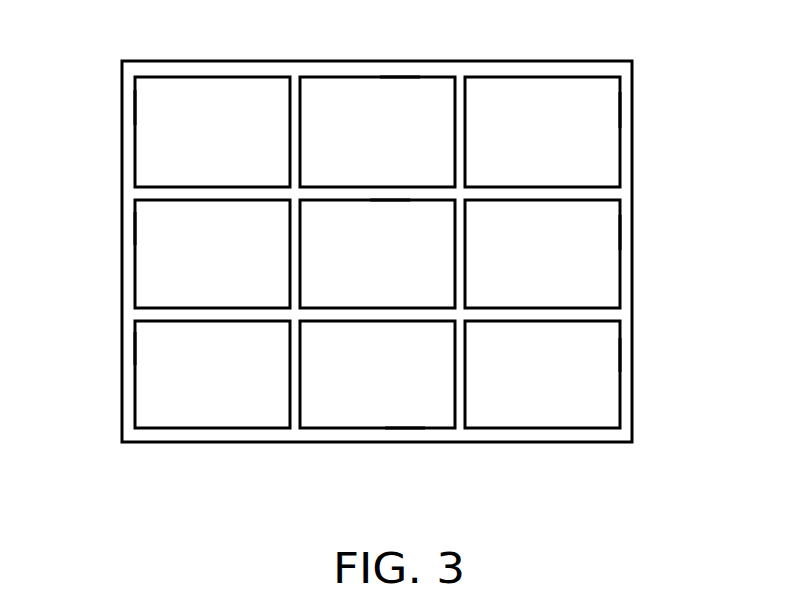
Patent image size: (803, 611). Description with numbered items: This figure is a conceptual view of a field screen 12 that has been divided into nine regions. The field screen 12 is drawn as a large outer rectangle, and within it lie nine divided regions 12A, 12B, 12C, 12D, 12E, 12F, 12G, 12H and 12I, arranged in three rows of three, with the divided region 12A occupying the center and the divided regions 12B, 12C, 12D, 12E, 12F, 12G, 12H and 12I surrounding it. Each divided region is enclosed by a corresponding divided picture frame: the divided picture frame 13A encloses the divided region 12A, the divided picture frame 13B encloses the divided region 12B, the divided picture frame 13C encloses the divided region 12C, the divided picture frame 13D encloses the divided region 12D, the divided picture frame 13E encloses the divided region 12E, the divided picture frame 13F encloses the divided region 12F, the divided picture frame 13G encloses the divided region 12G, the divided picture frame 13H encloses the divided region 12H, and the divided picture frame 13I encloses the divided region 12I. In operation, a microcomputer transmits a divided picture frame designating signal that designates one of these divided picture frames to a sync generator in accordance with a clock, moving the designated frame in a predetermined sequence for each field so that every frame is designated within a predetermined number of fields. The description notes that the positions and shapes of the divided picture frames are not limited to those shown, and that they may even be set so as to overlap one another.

The field screen 12 is at (590, 61).
The divided region 12A is at (377, 254).
The divided region 12B is at (377, 132).
The divided region 12C is at (542, 132).
The divided region 12D is at (542, 254).
The divided region 12E is at (542, 374).
The divided region 12F is at (377, 374).
The divided region 12G is at (212, 374).
The divided region 12H is at (212, 254).
The divided region 12I is at (212, 132).
The divided picture frame 13A is at (385, 200).
The divided picture frame 13B is at (395, 78).
The divided picture frame 13C is at (620, 110).
The divided picture frame 13D is at (620, 234).
The divided picture frame 13E is at (620, 356).
The divided picture frame 13F is at (407, 428).
The divided picture frame 13G is at (135, 348).
The divided picture frame 13H is at (135, 228).
The divided picture frame 13I is at (135, 108).